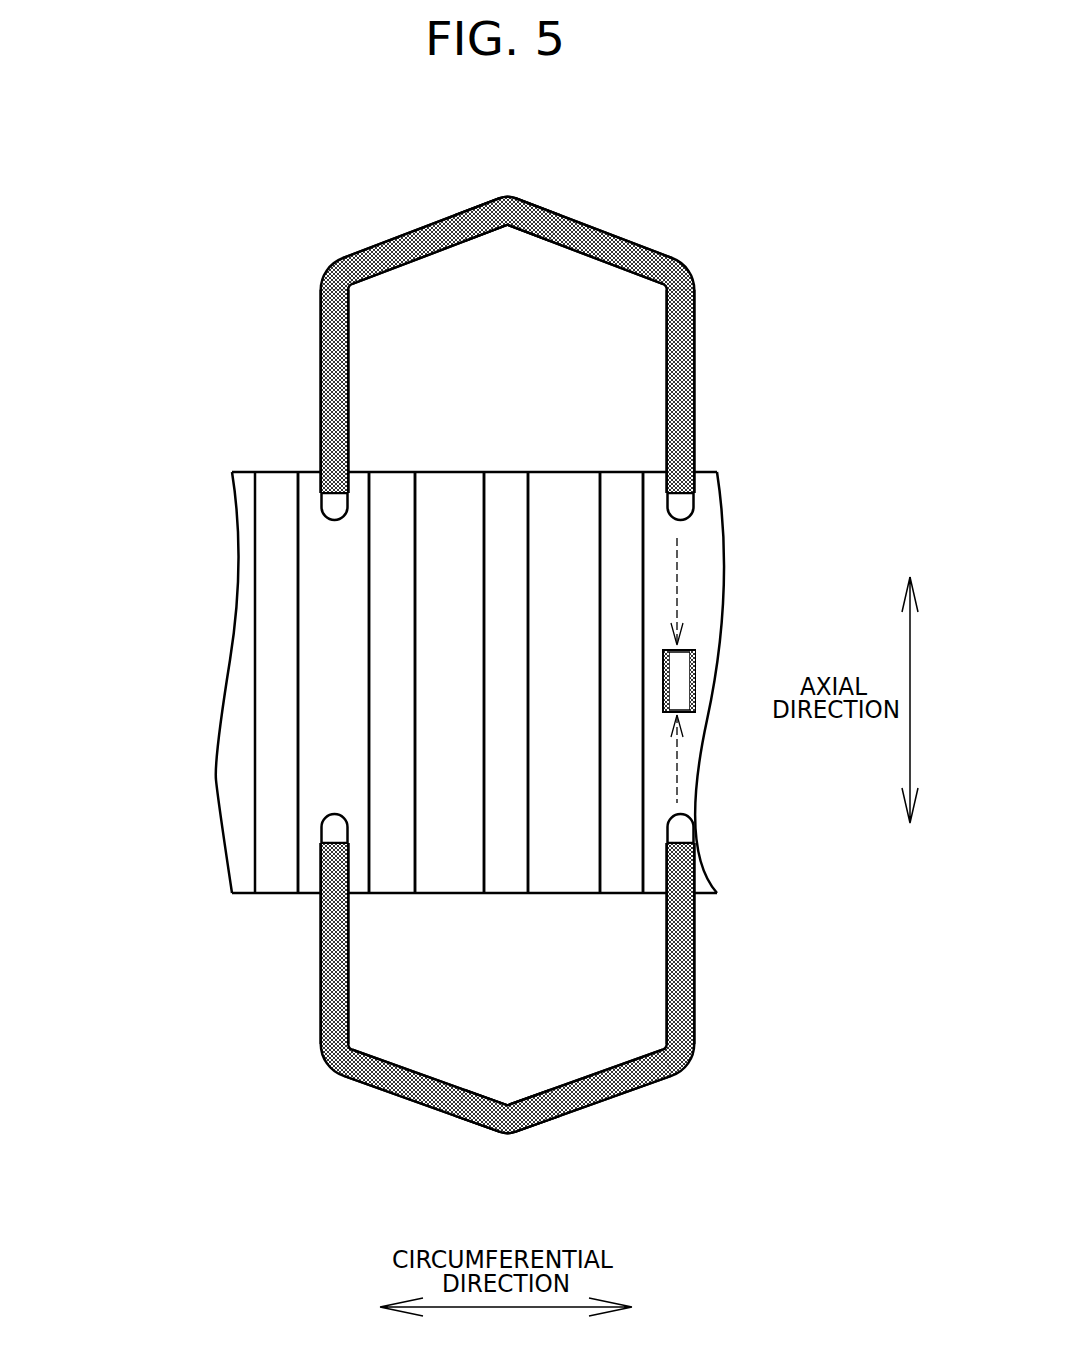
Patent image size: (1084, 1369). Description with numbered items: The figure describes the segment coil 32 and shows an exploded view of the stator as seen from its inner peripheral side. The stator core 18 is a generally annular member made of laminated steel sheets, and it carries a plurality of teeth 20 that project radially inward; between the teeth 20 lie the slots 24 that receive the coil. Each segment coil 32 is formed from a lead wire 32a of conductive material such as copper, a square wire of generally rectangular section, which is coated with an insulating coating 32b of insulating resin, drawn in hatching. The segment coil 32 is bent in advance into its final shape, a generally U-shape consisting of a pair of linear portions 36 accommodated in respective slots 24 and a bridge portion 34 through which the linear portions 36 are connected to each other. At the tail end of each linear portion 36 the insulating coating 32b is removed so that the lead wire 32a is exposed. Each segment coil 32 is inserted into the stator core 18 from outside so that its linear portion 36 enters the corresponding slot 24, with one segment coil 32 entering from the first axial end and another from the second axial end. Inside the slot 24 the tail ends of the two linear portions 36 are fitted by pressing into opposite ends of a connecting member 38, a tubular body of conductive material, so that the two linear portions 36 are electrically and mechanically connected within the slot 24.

The stator core 18 is at (182, 693).
The teeth 20 is at (272, 478).
The slots 24 is at (310, 480).
The segment coil 32 is at (468, 652).
The lead wire 32a is at (330, 505).
The insulating coating 32b is at (575, 230).
The bridge portion 34 is at (447, 217).
The linear portions 36 is at (320, 362).
The connecting member 38 is at (697, 657).